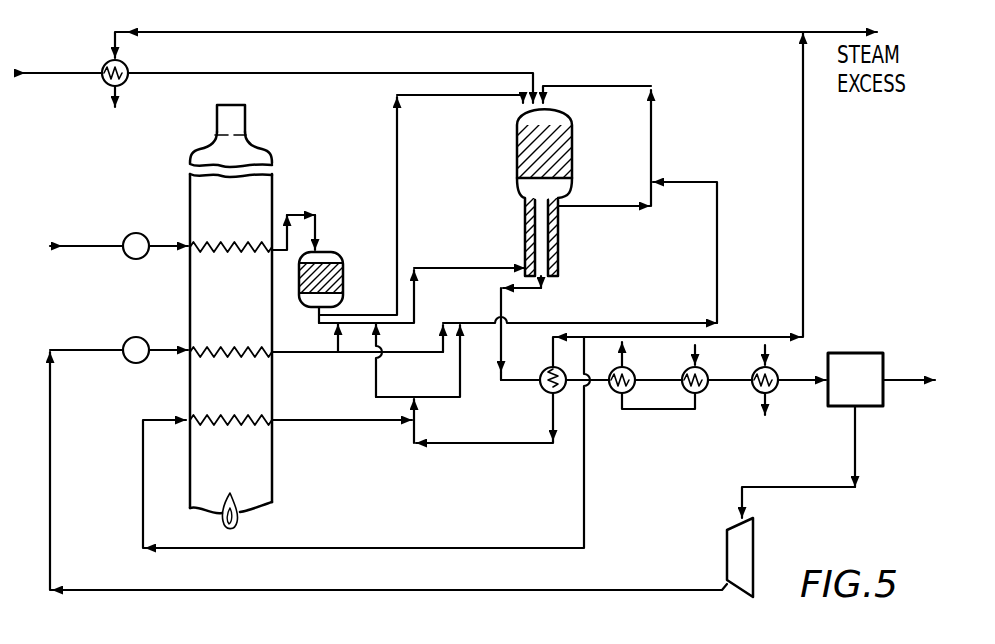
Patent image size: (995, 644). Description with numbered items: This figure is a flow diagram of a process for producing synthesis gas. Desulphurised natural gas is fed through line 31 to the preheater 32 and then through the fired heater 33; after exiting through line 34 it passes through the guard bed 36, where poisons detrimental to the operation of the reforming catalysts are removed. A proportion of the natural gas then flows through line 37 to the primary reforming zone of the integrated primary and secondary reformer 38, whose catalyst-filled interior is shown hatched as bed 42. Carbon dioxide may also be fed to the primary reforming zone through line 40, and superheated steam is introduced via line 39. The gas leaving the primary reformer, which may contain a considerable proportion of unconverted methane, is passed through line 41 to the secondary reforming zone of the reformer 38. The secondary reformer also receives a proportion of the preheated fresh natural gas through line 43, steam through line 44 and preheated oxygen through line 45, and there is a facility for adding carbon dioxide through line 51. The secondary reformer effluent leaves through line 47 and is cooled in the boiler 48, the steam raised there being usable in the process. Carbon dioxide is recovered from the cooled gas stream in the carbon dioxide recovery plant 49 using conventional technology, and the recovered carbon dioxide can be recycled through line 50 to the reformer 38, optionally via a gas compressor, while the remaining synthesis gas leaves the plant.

The line 31 is at (100, 249).
The preheater 32 is at (125, 63).
The fired heater 33 is at (205, 206).
The line 34 is at (271, 255).
The guard bed 36 is at (345, 283).
The line 37 is at (416, 300).
The integrated primary and secondary reformer 38 is at (578, 192).
The line 39 is at (375, 376).
The line 40 is at (335, 341).
The line 41 is at (653, 137).
The catalyst bed 42 is at (556, 157).
The line 43 is at (458, 97).
The line 44 is at (458, 357).
The line 45 is at (253, 73).
The line 47 is at (503, 355).
The boiler 48 is at (629, 369).
The carbon dioxide recovery plant 49 is at (857, 368).
The line 50 is at (856, 457).
The line 51 is at (429, 354).